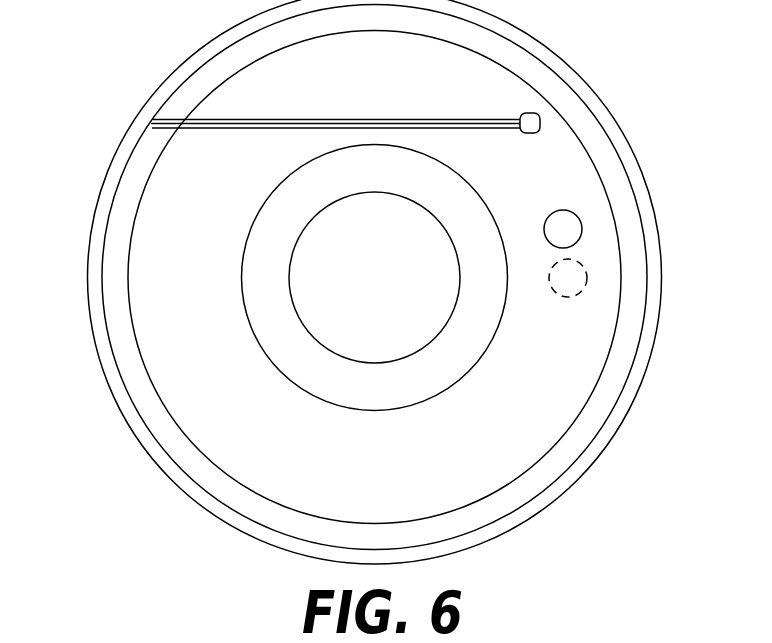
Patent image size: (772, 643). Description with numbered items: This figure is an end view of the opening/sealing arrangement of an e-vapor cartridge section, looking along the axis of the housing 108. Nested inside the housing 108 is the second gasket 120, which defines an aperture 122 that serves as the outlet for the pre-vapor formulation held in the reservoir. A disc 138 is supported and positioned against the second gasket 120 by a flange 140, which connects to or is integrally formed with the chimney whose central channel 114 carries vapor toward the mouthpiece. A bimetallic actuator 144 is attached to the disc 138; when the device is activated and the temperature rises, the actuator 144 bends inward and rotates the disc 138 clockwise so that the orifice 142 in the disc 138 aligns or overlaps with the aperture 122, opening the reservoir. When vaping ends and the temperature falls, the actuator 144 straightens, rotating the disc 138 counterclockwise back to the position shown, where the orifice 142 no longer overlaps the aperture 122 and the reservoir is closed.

The housing 108 is at (562, 60).
The second gasket 120 is at (600, 152).
The disc 138 is at (168, 203).
The flange 140 is at (257, 268).
The channel 114 is at (317, 312).
The orifice 142 is at (573, 228).
The aperture 122 is at (587, 281).
The bimetallic actuator 144 is at (280, 100).